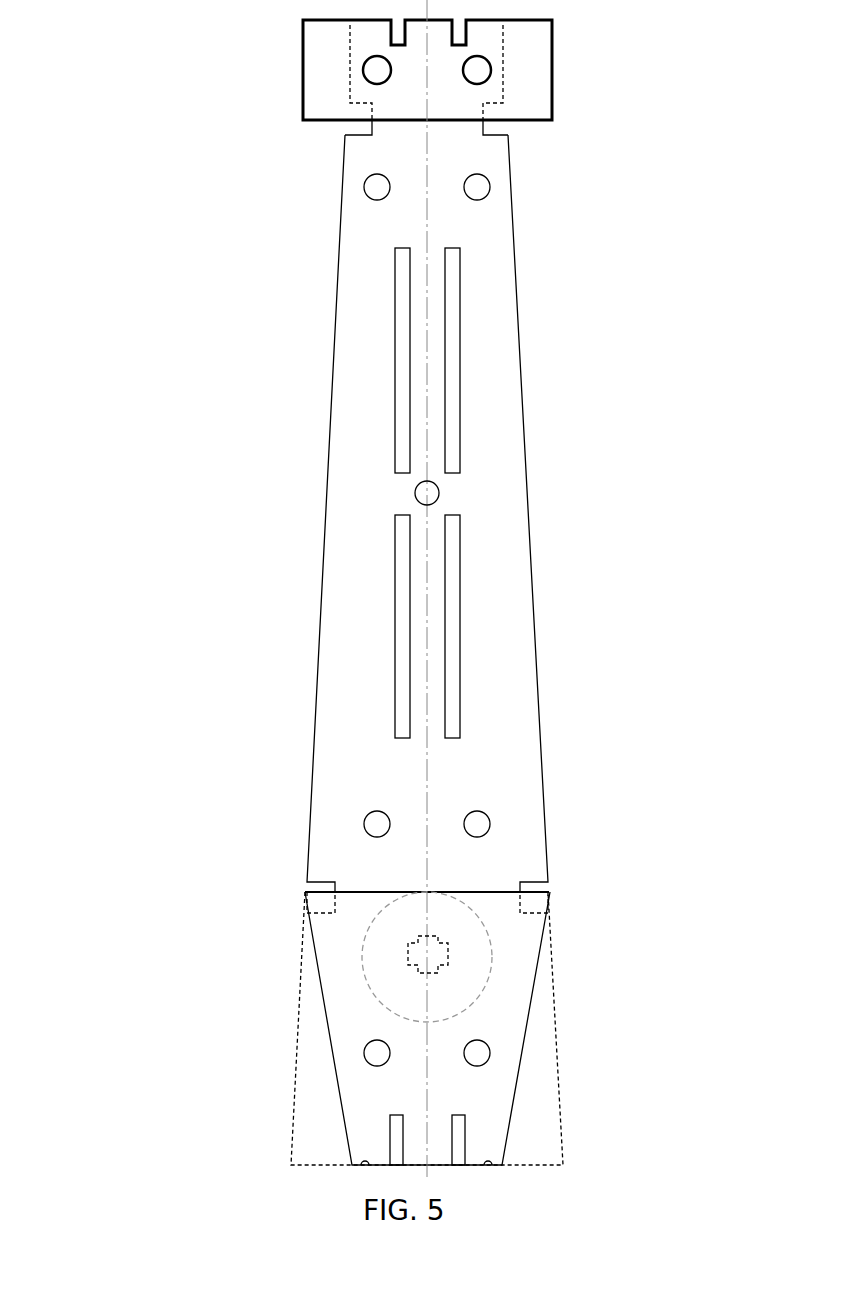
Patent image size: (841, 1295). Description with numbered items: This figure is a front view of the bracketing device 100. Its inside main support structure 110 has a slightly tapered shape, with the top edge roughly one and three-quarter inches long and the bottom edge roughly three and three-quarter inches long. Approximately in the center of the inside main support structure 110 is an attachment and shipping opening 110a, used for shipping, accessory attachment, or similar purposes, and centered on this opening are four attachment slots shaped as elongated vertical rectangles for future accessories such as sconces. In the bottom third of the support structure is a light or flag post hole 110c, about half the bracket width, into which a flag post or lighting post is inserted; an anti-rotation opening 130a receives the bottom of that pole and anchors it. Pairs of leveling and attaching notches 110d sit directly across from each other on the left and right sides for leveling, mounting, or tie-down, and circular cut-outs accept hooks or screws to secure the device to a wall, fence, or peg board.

The bracketing device 100 is at (294, 592).
The inside main support structure 110 is at (495, 345).
The attachment and shipping opening 110a is at (440, 492).
The light or flag post hole 110c is at (395, 928).
The leveling and attaching notches 110d is at (500, 123).
The anti-rotation opening 130a is at (440, 957).